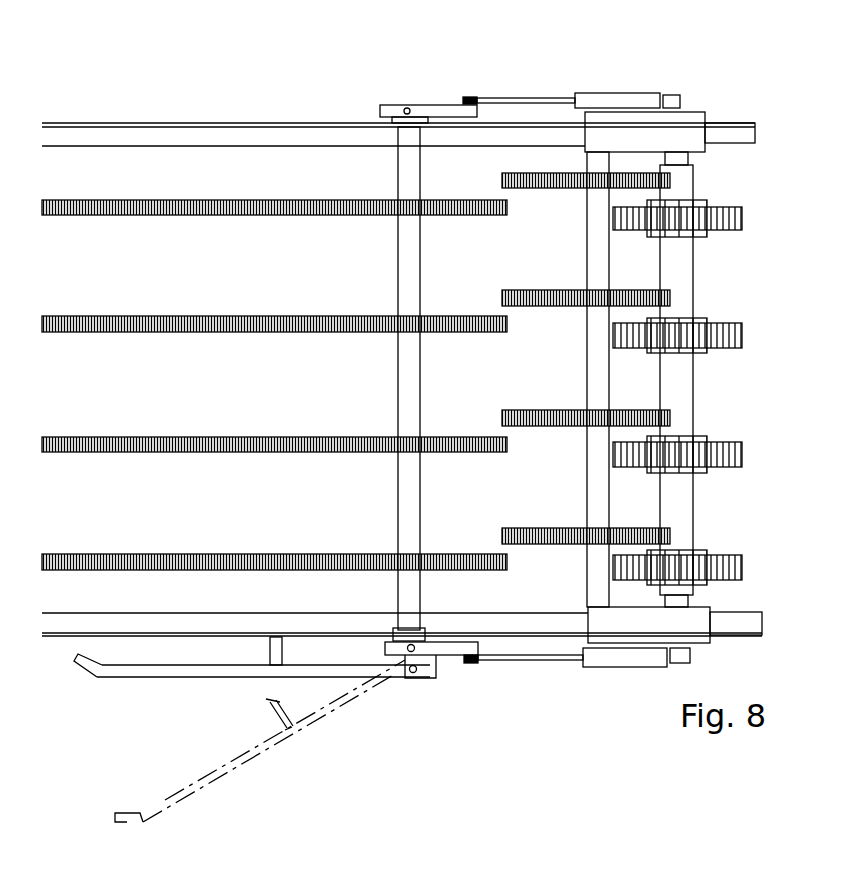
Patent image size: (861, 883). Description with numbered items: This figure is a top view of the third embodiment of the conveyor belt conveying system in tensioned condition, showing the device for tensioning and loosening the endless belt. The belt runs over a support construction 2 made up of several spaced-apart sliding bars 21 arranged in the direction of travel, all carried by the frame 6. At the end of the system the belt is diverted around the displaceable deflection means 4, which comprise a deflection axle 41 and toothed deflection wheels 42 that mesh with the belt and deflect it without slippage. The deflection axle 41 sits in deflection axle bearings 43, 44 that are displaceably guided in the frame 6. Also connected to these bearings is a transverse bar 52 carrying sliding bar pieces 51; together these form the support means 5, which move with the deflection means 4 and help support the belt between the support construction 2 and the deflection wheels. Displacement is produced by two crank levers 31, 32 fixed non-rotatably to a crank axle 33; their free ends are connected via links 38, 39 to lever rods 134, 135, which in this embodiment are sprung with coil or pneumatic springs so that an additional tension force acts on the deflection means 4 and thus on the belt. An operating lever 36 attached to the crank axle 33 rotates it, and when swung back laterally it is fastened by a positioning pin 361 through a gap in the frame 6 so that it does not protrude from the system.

The support construction 2 is at (274, 306).
The sliding bars 21 is at (120, 208).
The frame 6 is at (208, 130).
The crank axle 33 is at (379, 414).
The crank lever 32 is at (392, 106).
The crank lever 31 is at (440, 656).
The support means 5 is at (556, 264).
The link 39 is at (471, 97).
The sprung lever rod 135 is at (576, 95).
The transverse bar 52 is at (600, 165).
The deflection axle bearing 44 is at (700, 140).
The toothed deflection wheels 42 is at (735, 213).
The sliding bar pieces 51 is at (668, 294).
The displaceable deflection means 4 is at (717, 377).
The deflection axle 41 is at (683, 514).
The deflection axle bearing 43 is at (692, 621).
The sprung lever rod 134 is at (575, 661).
The link 38 is at (468, 664).
The operating lever 36 is at (106, 680).
The positioning pin 361 is at (272, 645).